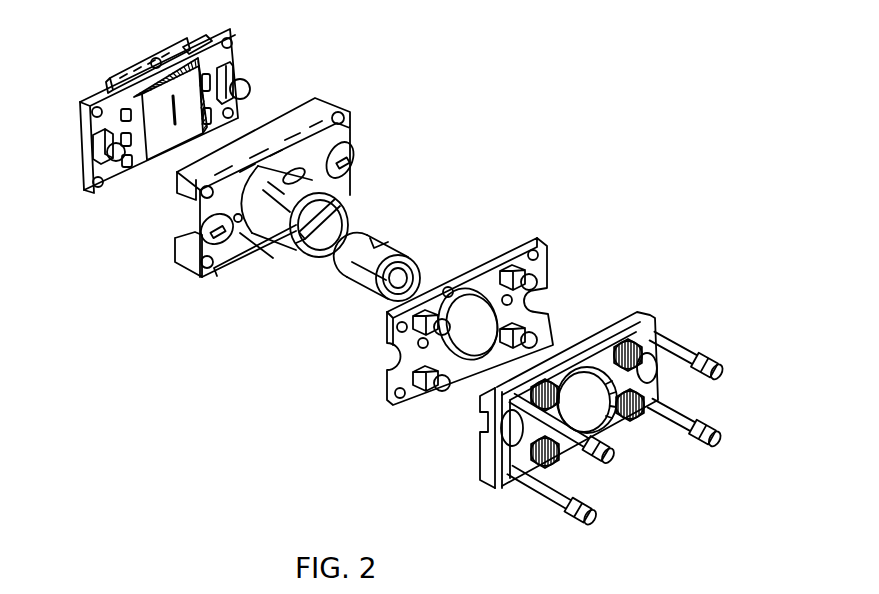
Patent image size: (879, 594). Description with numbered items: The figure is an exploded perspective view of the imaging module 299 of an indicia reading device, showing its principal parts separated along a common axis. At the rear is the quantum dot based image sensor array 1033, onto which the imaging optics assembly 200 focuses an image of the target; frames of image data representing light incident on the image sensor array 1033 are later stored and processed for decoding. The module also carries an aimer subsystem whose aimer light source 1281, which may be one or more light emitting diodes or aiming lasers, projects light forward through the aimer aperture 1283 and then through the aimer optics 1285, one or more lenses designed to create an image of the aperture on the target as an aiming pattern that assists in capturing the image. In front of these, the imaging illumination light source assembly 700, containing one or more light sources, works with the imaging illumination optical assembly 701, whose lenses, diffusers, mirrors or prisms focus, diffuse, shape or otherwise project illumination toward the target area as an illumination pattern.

The imaging module 299 is at (667, 92).
The quantum dot based image sensor array 1033 is at (156, 152).
The aimer light source 1281 is at (250, 80).
The aimer aperture 1283 is at (357, 152).
The imaging optics assembly 200 is at (393, 252).
The imaging illumination light source assembly 700 is at (438, 312).
The aimer optics 1285 is at (655, 368).
The imaging illumination optical assembly 701 is at (553, 378).